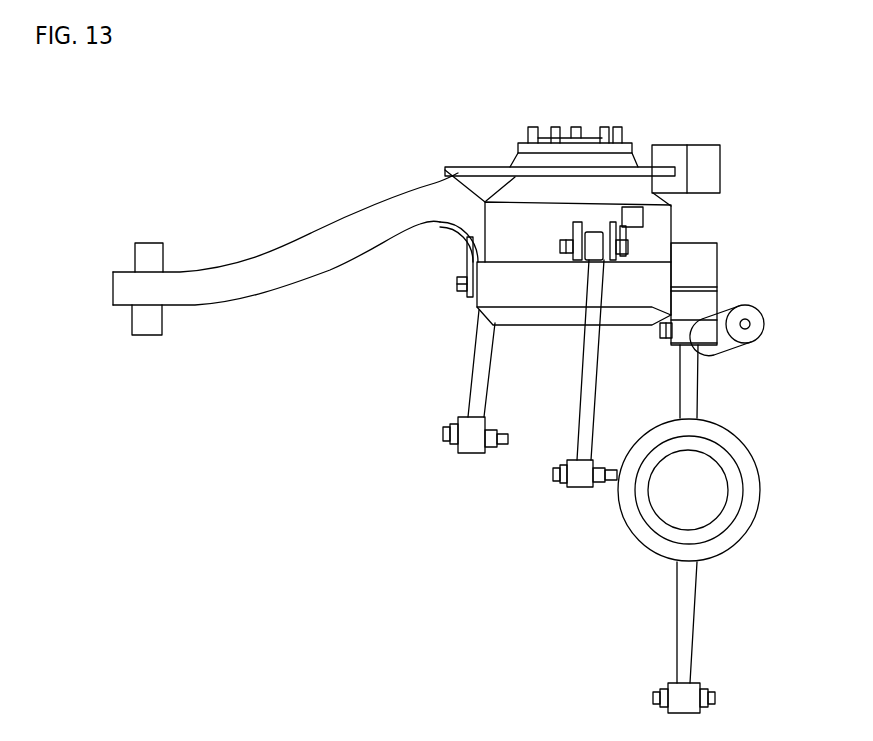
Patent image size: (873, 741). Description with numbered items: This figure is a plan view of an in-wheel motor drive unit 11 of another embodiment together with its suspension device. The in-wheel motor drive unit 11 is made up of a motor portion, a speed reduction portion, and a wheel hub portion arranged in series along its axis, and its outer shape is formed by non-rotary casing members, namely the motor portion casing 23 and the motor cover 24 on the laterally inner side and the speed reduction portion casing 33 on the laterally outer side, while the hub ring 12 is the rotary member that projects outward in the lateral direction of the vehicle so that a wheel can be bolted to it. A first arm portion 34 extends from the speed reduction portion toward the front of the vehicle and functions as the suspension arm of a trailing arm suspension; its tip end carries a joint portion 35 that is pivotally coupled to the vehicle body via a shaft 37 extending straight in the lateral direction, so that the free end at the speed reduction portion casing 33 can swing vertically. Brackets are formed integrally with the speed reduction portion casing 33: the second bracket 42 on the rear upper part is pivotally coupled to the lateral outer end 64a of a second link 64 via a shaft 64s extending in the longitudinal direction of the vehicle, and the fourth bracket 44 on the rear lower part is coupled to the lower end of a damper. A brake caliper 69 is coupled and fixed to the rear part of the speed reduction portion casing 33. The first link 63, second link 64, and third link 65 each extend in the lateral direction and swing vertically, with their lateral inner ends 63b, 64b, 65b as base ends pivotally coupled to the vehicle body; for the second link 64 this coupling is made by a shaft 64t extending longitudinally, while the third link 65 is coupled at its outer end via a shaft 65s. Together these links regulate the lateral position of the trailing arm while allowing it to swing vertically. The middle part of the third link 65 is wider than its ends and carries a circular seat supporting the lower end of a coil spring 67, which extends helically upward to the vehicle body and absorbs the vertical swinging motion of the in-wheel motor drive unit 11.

The in-wheel motor drive unit 11 is at (671, 232).
The hub ring 12 is at (565, 133).
The motor portion casing 23 is at (492, 283).
The motor cover 24 is at (543, 320).
The speed reduction portion casing 33 is at (502, 215).
The first arm portion 34 is at (262, 263).
The joint portion 35 is at (127, 290).
The shaft 37 is at (147, 253).
The second bracket 42 is at (621, 234).
The fourth bracket 44 is at (698, 325).
The first link 63 is at (473, 365).
The lateral inner end of first link 63b is at (469, 453).
The second link 64 is at (587, 364).
The lateral outer end 64a is at (597, 234).
The lateral inner end 64b is at (580, 478).
The shaft 64s is at (625, 245).
The shaft 64t is at (443, 435).
The third link 65 is at (762, 498).
The lateral inner end of third link 65b is at (690, 696).
The shaft 65s is at (667, 338).
The coil spring 67 is at (730, 468).
The brake caliper 69 is at (696, 150).